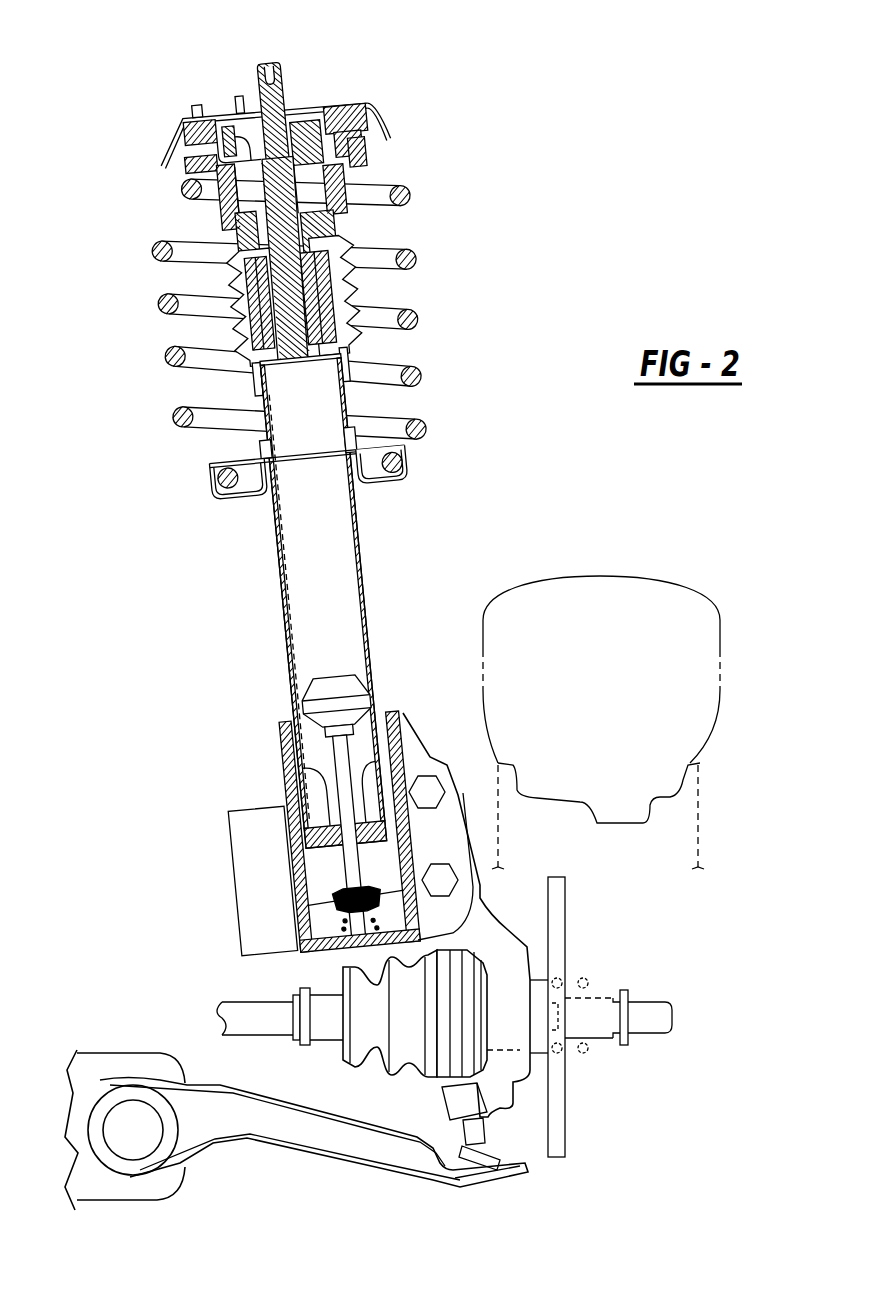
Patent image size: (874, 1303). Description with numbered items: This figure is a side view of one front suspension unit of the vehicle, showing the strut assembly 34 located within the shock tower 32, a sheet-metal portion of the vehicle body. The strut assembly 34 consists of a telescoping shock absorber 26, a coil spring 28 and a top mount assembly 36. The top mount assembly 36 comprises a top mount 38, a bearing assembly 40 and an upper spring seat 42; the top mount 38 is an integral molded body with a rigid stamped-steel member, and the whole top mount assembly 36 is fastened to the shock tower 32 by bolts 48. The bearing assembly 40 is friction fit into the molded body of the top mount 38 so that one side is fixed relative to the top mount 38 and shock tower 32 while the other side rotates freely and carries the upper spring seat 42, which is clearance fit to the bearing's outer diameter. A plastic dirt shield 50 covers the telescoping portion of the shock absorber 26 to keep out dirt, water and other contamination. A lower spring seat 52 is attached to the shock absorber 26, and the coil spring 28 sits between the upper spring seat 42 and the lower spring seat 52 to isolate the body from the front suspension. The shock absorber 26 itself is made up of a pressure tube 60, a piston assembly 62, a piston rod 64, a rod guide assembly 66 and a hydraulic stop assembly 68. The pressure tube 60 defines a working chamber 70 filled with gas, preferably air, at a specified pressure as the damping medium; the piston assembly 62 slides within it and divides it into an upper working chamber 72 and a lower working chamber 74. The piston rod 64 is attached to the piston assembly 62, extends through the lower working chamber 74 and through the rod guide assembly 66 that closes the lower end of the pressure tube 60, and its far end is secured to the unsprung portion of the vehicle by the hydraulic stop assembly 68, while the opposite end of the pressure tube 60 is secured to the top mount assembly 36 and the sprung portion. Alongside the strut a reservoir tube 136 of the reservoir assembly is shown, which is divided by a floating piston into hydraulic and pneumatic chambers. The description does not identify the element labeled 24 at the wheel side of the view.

The wheel 24 is at (643, 577).
The shock absorber 26 is at (364, 503).
The coil spring 28 is at (402, 199).
The shock tower 32 is at (397, 131).
The strut assembly 34 is at (253, 657).
The top mount assembly 36 is at (309, 58).
The top mount 38 is at (178, 140).
The bearing assembly 40 is at (353, 130).
The upper spring seat 42 is at (217, 213).
The bolts 48 is at (203, 106).
The plastic dirt shield 50 is at (350, 299).
The lower spring seat 52 is at (213, 493).
The pressure tube 60 is at (283, 602).
The piston assembly 62 is at (361, 680).
The piston rod 64 is at (334, 760).
The rod guide assembly 66 is at (301, 790).
The hydraulic stop assembly 68 is at (346, 895).
The working chamber 70 is at (340, 584).
The upper working chamber 72 is at (322, 502).
The lower working chamber 74 is at (362, 772).
The reservoir tube 136 is at (258, 937).